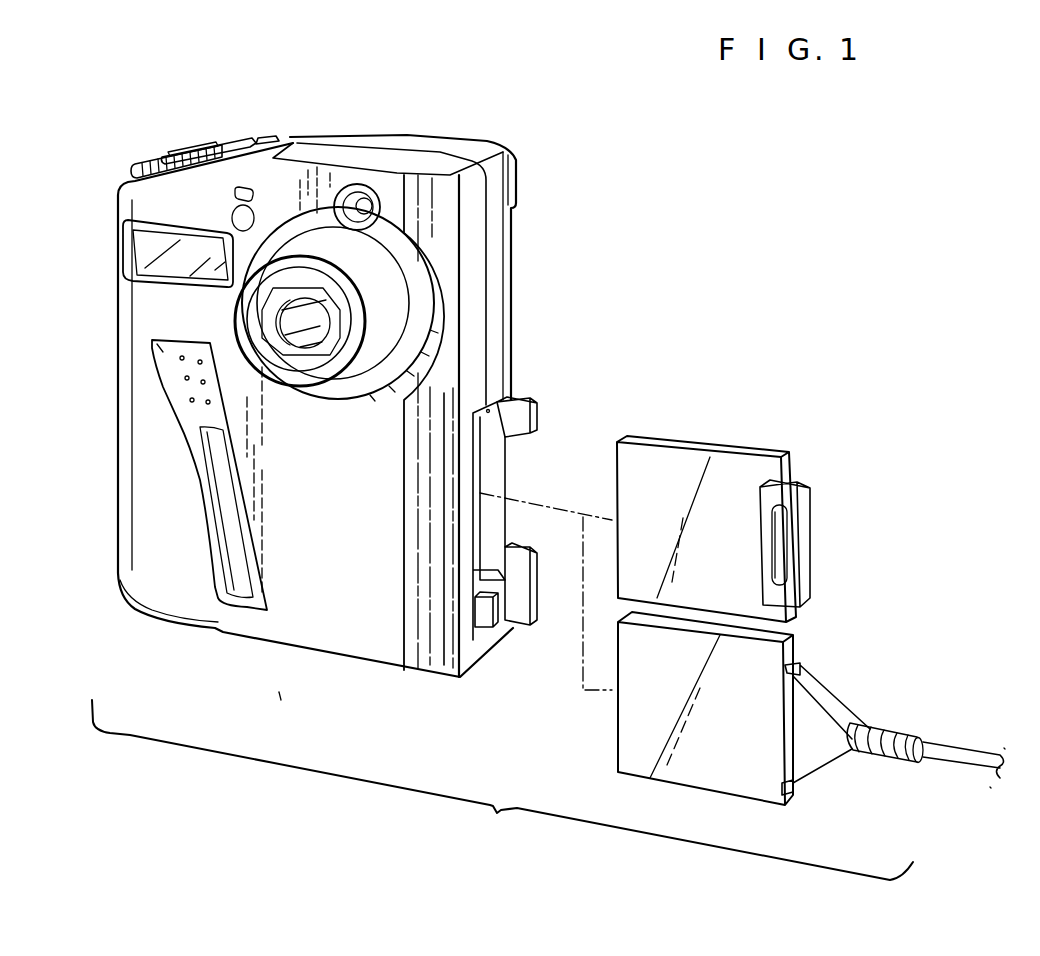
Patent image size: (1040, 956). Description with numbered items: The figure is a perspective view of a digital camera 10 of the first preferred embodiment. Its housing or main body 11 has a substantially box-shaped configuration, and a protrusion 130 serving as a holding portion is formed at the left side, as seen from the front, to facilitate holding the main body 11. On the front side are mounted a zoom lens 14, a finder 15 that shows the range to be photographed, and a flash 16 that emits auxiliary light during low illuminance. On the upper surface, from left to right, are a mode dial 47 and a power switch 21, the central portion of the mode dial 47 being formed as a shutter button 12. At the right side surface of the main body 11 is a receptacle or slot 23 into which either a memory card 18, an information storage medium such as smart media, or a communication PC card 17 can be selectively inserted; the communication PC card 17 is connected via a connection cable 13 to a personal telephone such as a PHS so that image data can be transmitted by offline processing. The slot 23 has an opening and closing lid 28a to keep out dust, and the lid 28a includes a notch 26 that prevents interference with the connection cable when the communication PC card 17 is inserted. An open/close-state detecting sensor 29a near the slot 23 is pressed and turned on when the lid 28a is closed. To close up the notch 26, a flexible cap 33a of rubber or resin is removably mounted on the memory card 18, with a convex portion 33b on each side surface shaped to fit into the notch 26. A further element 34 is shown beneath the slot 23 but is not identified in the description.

The digital camera 10 is at (488, 77).
The main body 11 is at (360, 648).
The shutter button 12 is at (184, 157).
The connection cable 13 is at (823, 731).
The zoom lens 14 is at (367, 308).
The finder 15 is at (360, 196).
The flash 16 is at (150, 248).
The communication PC card 17 is at (693, 770).
The memory card 18 is at (743, 473).
The power switch 21 is at (266, 138).
The slot 23 is at (482, 435).
The notch 26 is at (528, 445).
The opening and closing lid 28a is at (523, 620).
The open/close-state detecting sensor 29a is at (489, 410).
The cap 33a is at (797, 545).
The convex portion 33b is at (780, 523).
The stopper 34 is at (488, 620).
The mode dial 47 is at (146, 162).
The protrusion 130 is at (223, 487).